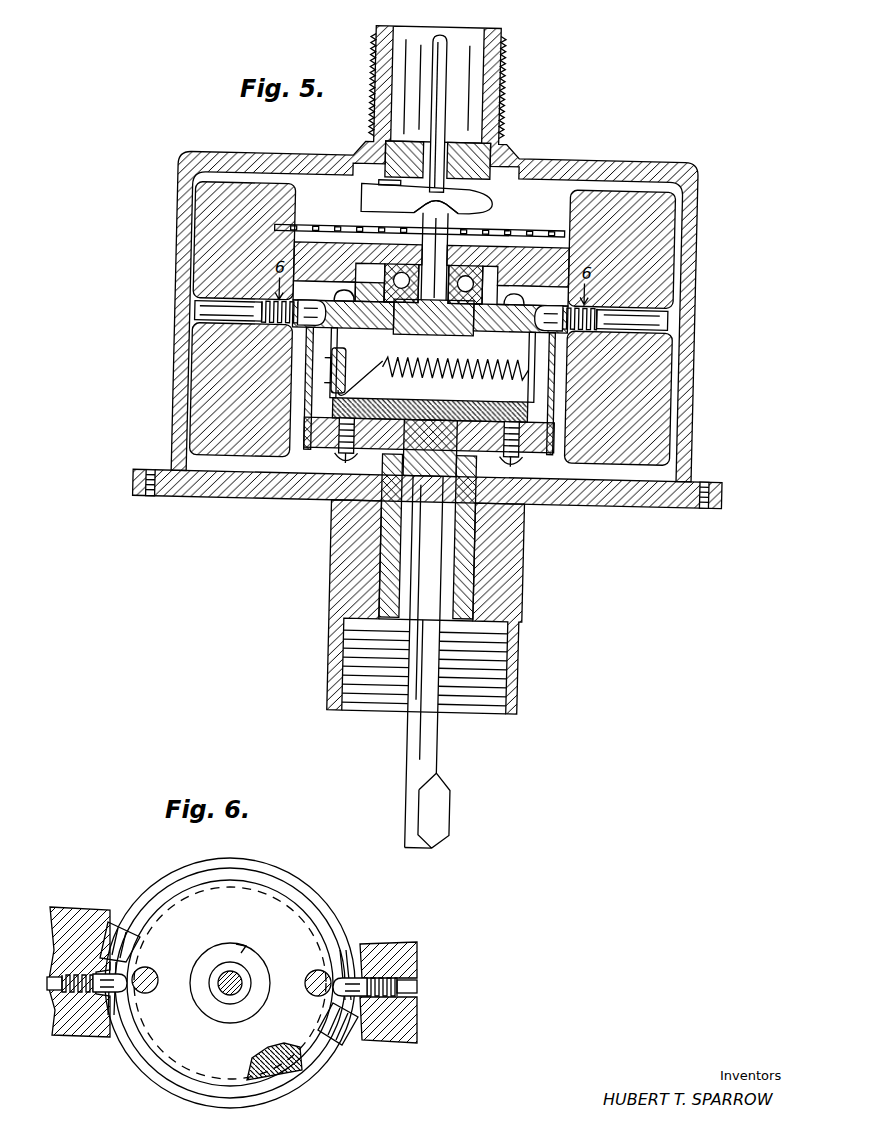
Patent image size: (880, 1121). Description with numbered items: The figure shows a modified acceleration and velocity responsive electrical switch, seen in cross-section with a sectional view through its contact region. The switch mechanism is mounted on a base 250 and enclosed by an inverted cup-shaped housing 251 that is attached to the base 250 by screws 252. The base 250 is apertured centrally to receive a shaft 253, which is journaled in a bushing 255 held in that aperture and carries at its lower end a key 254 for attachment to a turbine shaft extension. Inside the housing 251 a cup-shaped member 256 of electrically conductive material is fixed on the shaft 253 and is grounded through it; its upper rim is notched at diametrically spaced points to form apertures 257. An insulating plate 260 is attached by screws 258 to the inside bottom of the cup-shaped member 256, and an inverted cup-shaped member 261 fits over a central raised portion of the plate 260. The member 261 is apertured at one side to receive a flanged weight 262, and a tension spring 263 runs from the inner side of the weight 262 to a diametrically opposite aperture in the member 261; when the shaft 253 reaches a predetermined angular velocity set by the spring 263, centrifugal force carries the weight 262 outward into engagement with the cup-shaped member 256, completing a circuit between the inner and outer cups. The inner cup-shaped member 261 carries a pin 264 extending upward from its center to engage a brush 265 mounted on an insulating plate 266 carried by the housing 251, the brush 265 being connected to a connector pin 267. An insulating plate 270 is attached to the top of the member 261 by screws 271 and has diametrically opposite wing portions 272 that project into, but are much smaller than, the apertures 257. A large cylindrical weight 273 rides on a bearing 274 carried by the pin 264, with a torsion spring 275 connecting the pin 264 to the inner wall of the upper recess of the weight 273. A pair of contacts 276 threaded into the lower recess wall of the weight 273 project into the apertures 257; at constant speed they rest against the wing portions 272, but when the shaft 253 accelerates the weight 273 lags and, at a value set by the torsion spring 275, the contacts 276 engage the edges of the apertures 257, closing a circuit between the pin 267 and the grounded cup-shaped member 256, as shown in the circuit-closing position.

In FIG. 5, the base 250 is at (514, 548).
In FIG. 5, the housing 251 is at (691, 256).
In FIG. 5, the screws 252 is at (155, 502).
In FIG. 5, the shaft 253 is at (434, 744).
In FIG. 5, the key 254 is at (446, 820).
In FIG. 5, the bushing 255 is at (386, 542).
In FIG. 5, the cup-shaped member 256 is at (324, 457).
In FIG. 6, the cup-shaped member 256 is at (300, 884).
In FIG. 5, the apertures 257 is at (296, 321).
In FIG. 6, the apertures 257 is at (122, 925).
In FIG. 5, the screws 258 is at (514, 457).
In FIG. 5, the insulating plate 260 is at (446, 405).
In FIG. 5, the inverted cup-shaped member 261 is at (378, 360).
In FIG. 5, the weight 262 is at (346, 358).
In FIG. 5, the tension spring 263 is at (459, 367).
In FIG. 5, the pin 264 is at (464, 219).
In FIG. 6, the pin 264 is at (240, 990).
In FIG. 5, the brush 265 is at (486, 203).
In FIG. 5, the insulating plate 266 is at (444, 140).
In FIG. 5, the pin 267 is at (432, 52).
In FIG. 5, the insulating plate 270 is at (354, 232).
In FIG. 6, the insulating plate 270 is at (195, 905).
In FIG. 5, the screws 271 is at (542, 292).
In FIG. 6, the screws 271 is at (160, 968).
In FIG. 6, the wing portions 272 is at (135, 928).
In FIG. 5, the weight 273 is at (199, 219).
In FIG. 6, the weight 273 is at (75, 1030).
In FIG. 5, the bearing 274 is at (387, 243).
In FIG. 5, the torsion spring 275 is at (314, 220).
In FIG. 5, the contacts 276 is at (335, 292).
In FIG. 6, the contacts 276 is at (110, 1015).